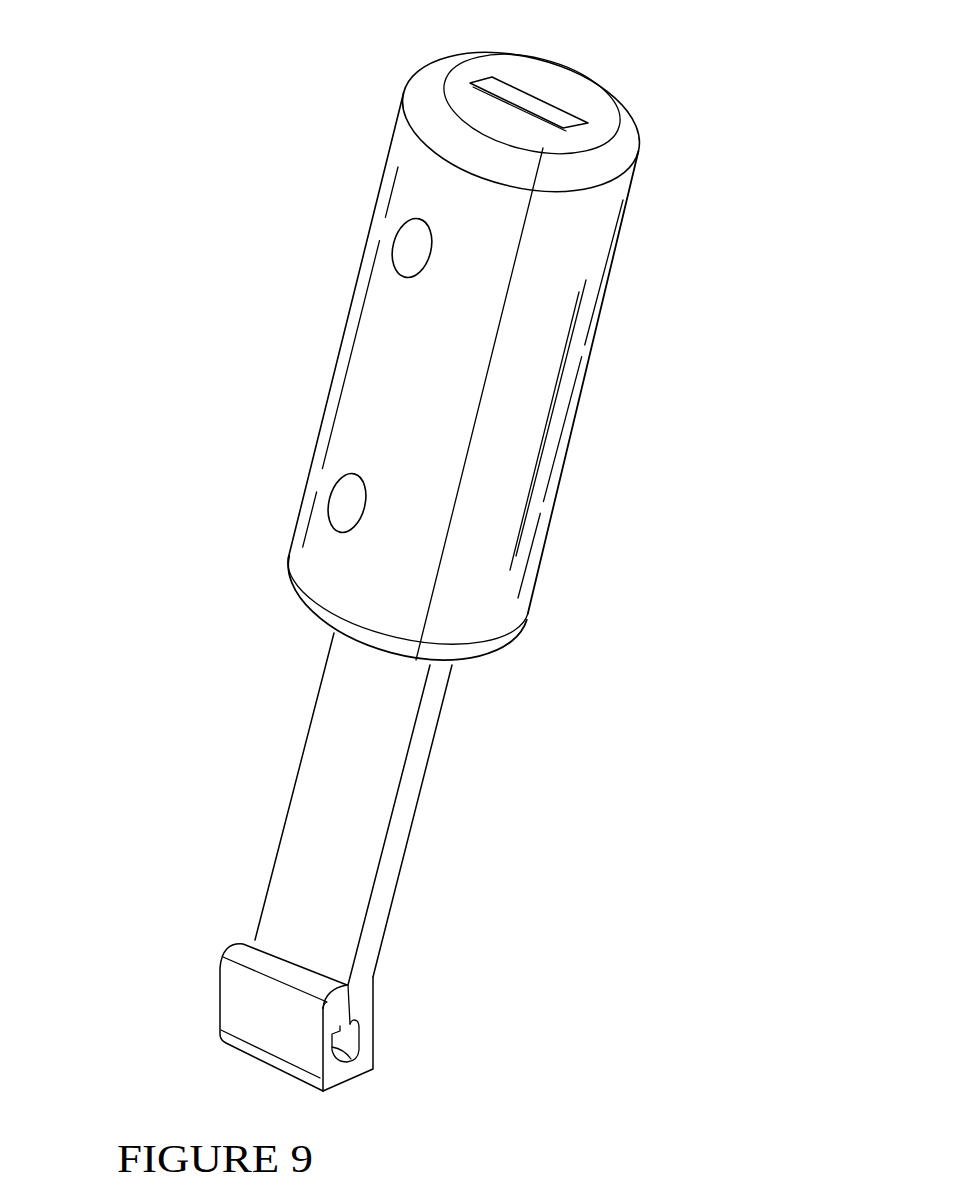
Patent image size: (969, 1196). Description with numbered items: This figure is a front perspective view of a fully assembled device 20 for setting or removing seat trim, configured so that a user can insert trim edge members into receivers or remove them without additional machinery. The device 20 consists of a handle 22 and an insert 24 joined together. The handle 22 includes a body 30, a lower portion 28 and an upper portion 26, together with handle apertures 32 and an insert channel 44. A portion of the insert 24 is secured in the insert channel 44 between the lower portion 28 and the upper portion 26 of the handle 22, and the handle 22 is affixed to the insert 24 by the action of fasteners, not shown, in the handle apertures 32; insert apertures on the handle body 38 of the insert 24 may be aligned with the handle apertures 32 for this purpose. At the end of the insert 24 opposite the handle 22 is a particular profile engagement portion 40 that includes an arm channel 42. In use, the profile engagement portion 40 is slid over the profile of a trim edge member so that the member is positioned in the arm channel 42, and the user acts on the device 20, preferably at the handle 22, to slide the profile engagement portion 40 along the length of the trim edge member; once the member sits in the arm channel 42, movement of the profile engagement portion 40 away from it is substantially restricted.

The device 20 is at (133, 230).
The handle 22 is at (606, 297).
The insert 24 is at (419, 819).
The upper portion 26 is at (581, 93).
The lower portion 28 is at (475, 663).
The body 30 is at (572, 388).
The handle apertures 32 is at (429, 250).
The handle body 38 is at (306, 790).
The profile engagement portion 40 is at (219, 1008).
The arm channel 42 is at (350, 1057).
The insert channel 44 is at (528, 102).